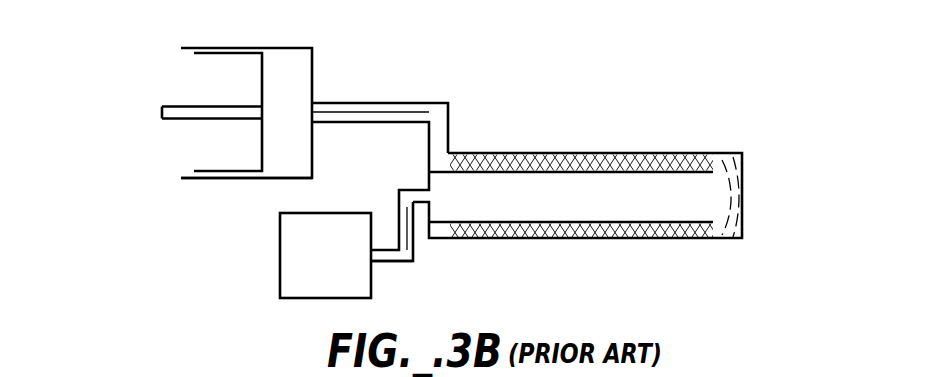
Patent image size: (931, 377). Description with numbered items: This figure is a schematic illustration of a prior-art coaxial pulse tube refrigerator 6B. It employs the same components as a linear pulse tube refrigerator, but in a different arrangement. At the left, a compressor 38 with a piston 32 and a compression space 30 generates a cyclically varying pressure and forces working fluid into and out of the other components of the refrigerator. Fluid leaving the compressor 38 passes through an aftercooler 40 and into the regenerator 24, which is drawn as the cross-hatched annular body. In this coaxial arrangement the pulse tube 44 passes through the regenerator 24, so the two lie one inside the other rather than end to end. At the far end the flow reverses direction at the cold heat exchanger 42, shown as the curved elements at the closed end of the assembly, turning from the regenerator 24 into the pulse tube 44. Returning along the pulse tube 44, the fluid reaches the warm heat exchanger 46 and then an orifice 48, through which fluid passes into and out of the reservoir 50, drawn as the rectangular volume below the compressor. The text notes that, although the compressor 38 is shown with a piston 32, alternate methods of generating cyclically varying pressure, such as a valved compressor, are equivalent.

The compressor 38 is at (213, 47).
The piston 32 is at (250, 52).
The compression space 30 is at (283, 178).
The aftercooler 40 is at (406, 102).
The regenerator 24 is at (598, 153).
The cold heat exchanger 42 is at (730, 153).
The pulse tube 44 is at (672, 207).
The warm heat exchanger 46 is at (415, 243).
The orifice 48 is at (383, 263).
The reservoir 50 is at (280, 243).
The coaxial pulse tube refrigerator 6B is at (572, 280).